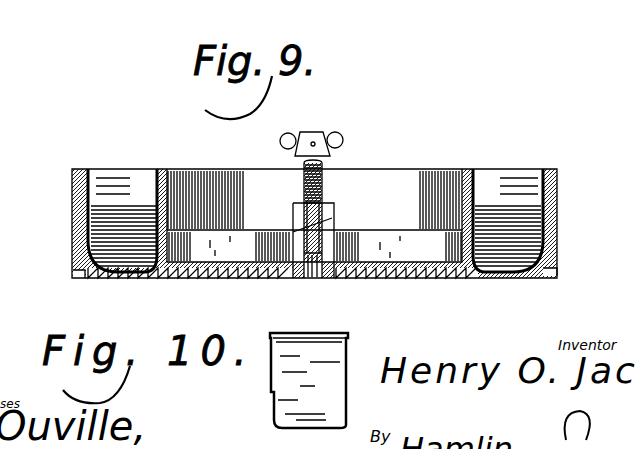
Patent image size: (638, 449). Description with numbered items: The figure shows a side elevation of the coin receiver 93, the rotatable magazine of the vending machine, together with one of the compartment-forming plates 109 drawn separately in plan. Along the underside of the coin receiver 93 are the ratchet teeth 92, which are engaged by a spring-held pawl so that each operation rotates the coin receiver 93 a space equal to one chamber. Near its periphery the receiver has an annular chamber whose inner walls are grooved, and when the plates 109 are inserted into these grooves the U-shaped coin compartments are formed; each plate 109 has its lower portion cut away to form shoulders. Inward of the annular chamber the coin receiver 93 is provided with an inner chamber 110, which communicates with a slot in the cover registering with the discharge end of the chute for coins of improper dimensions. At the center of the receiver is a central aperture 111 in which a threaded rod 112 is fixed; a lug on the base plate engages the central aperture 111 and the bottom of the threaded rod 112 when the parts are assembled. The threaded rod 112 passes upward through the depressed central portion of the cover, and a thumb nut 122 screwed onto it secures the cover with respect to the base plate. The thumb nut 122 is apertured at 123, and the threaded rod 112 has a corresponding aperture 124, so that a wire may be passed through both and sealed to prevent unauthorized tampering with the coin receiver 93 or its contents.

In FIG. 9, the ratchet teeth 92 is at (424, 278).
In FIG. 9, the coin receiver 93 is at (78, 246).
In FIG. 9, the plate 109 is at (498, 181).
In FIG. 10, the plate 109 is at (335, 356).
In FIG. 9, the inner chamber 110 is at (314, 216).
In FIG. 9, the central aperture 111 is at (314, 276).
In FIG. 9, the threaded rod 112 is at (321, 170).
In FIG. 9, the thumb nut 122 is at (345, 116).
In FIG. 9, the aperture 123 is at (280, 143).
In FIG. 9, the aperture 124 is at (304, 188).